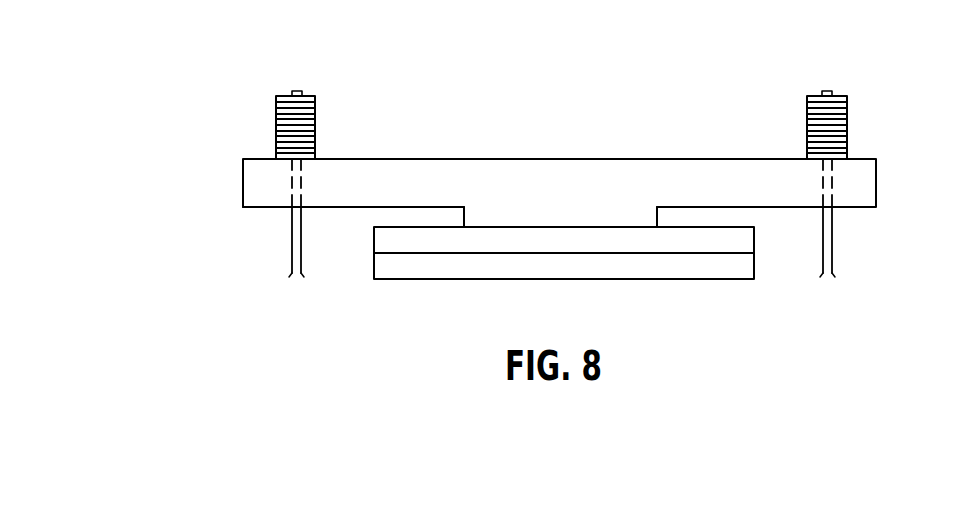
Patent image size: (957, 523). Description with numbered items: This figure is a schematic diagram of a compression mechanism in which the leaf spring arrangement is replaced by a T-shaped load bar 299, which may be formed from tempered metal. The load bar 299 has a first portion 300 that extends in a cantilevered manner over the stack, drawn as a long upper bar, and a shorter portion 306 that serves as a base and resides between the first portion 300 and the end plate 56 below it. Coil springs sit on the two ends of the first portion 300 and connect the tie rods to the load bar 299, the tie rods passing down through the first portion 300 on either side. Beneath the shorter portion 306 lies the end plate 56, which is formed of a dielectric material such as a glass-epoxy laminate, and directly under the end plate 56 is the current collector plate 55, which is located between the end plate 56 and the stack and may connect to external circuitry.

The T-shaped load bar 299 is at (388, 78).
The first portion 300 is at (559, 149).
The shorter portion 306 is at (612, 176).
The end plate 56 is at (613, 275).
The current collector plate 55 is at (581, 304).